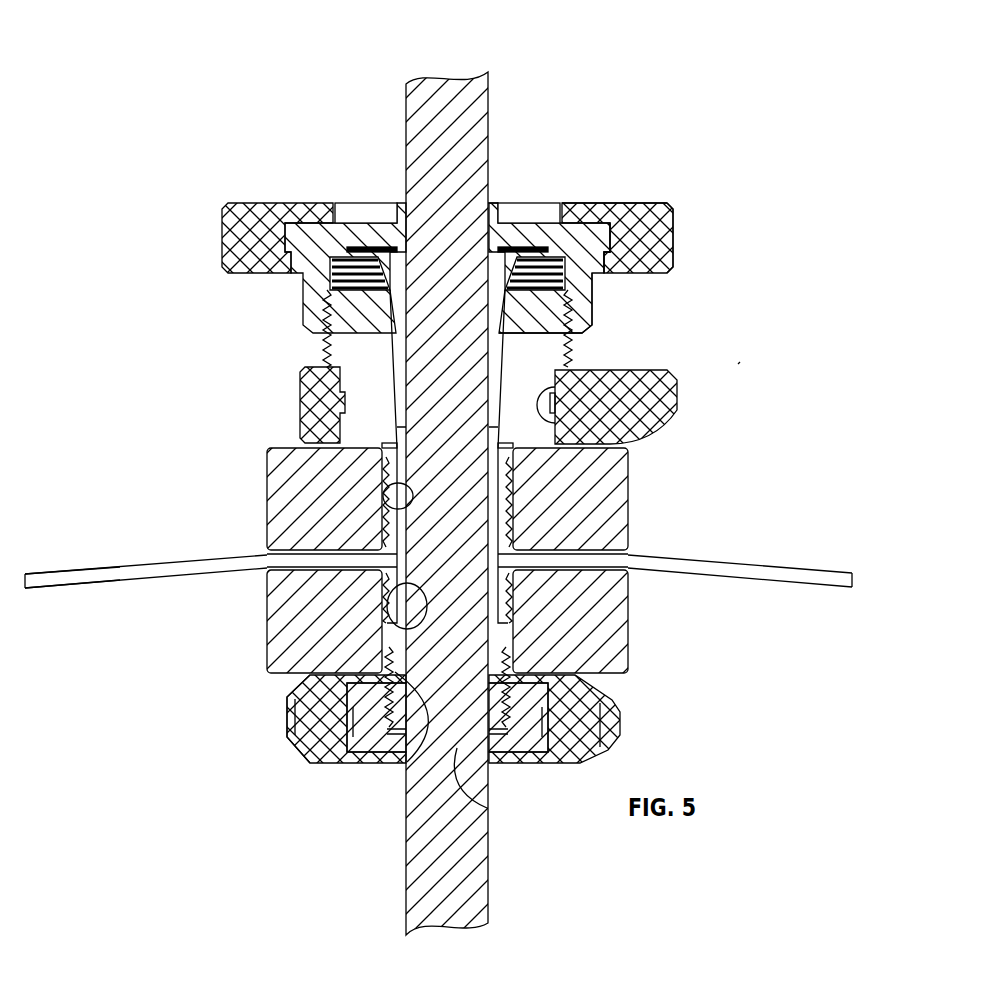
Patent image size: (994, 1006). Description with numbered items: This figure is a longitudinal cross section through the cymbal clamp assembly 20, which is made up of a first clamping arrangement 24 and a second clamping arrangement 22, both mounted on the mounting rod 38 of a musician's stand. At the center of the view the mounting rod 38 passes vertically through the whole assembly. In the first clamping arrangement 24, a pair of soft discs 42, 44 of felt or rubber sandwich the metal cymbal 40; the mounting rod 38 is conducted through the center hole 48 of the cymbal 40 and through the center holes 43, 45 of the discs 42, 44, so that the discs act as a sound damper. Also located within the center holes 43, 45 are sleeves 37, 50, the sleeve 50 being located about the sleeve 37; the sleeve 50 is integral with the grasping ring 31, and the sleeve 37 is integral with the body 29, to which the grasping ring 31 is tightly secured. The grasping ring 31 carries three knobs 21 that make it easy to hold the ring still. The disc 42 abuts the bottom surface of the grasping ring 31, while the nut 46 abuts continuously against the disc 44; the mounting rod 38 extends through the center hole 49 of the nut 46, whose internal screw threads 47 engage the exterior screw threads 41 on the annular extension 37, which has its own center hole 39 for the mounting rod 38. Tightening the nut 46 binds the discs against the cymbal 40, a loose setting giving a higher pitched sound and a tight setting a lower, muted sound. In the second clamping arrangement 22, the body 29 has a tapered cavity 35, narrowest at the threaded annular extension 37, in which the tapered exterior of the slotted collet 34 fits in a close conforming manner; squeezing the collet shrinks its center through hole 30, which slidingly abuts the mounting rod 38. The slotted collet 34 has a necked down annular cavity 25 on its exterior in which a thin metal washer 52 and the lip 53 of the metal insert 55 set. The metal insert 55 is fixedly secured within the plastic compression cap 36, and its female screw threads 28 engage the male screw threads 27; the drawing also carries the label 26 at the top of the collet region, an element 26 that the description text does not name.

The cymbal clamp assembly 20 is at (767, 360).
The knobs 21 is at (667, 407).
The second clamping arrangement 22 is at (720, 228).
The first clamping arrangement 24 is at (623, 713).
The necked down annular cavity 25 is at (507, 203).
The upper nut 26 is at (450, 205).
The male screw threads 27 is at (572, 357).
The female screw threads 28 is at (545, 323).
The body 29 is at (683, 203).
The center through hole 30 is at (490, 200).
The grasping ring 31 is at (300, 395).
The slotted collet 34 is at (587, 203).
The cavity 35 is at (400, 352).
The plastic compression cap 36 is at (332, 230).
The sleeve 37 is at (520, 610).
The mounting rod 38 is at (455, 862).
The center hole 39 is at (560, 383).
The cymbal 40 is at (655, 565).
The exterior screw threads 41 is at (560, 665).
The soft disc 42 is at (293, 478).
The center hole 43 is at (377, 517).
The soft disc 44 is at (290, 598).
The center hole 45 is at (380, 647).
The nut 46 is at (307, 713).
The internal screw threads 47 is at (487, 807).
The center hole 48 is at (267, 567).
The center hole 49 is at (440, 745).
The sleeve 50 is at (510, 517).
The thin metal washer 52 is at (345, 235).
The lip 53 is at (563, 203).
The metal insert 55 is at (617, 203).